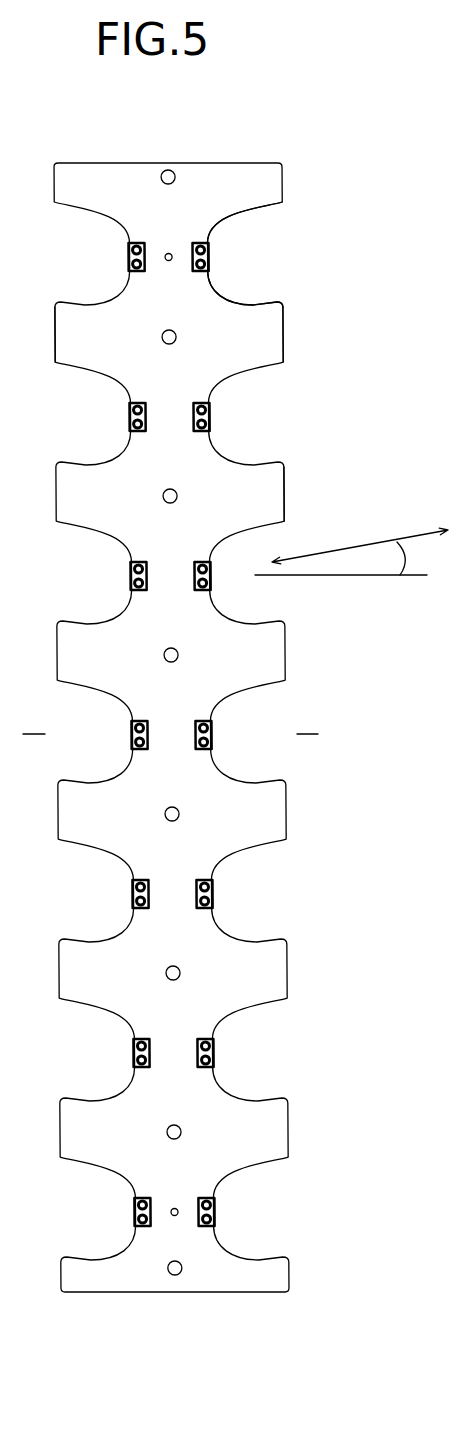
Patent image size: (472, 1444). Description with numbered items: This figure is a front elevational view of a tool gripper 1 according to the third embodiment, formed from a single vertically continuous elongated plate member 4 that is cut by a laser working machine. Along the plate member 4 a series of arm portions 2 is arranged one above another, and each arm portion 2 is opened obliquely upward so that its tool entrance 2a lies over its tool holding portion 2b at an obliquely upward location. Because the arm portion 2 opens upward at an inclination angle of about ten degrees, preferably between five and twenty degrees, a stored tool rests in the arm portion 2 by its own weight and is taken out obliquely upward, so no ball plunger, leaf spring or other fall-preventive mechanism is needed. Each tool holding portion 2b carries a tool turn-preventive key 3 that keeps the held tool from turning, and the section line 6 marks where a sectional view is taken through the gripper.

The tool gripper 1 is at (233, 154).
The arm portion 2 is at (266, 279).
The tool entrance 2a is at (267, 207).
The tool holding portion 2b is at (260, 301).
The tool turn-preventive key 3 is at (207, 253).
The plate member 4 is at (213, 490).
The section line 6- 6 is at (304, 744).